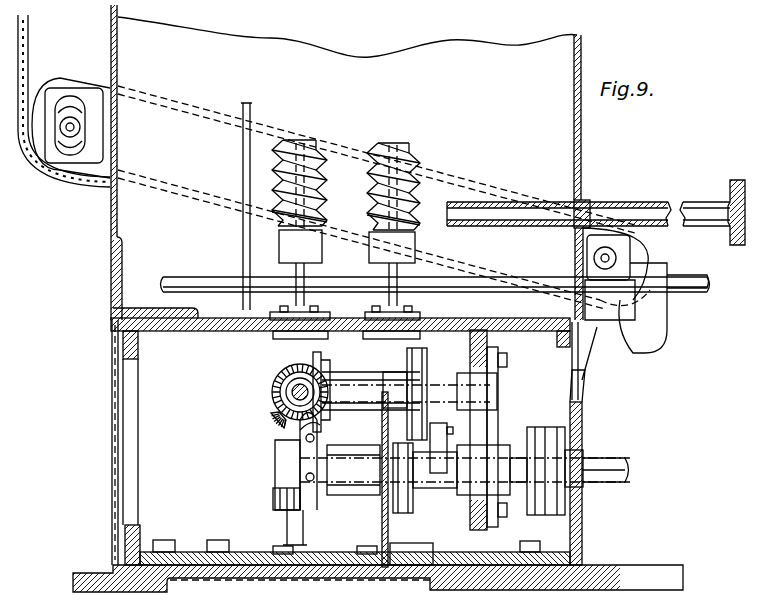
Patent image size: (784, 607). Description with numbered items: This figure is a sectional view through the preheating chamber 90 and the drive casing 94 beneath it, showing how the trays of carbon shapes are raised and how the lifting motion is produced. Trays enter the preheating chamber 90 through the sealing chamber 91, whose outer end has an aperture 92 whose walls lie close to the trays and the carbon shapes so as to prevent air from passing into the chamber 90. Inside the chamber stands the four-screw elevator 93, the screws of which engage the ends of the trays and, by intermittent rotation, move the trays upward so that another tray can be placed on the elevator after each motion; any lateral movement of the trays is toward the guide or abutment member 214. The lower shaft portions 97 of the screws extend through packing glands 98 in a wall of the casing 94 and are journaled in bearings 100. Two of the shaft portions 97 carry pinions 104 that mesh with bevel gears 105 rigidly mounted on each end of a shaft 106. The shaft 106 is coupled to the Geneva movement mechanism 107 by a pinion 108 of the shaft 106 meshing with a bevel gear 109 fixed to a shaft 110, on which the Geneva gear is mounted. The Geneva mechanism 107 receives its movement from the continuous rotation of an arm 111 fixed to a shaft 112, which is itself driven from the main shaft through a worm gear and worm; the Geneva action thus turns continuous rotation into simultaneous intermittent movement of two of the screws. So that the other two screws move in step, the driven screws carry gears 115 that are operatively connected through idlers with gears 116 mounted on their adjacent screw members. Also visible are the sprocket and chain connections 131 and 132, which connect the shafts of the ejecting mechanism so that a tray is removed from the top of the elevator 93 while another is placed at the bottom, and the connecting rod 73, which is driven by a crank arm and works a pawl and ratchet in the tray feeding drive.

The sprocket and chain connection 131 is at (22, 52).
The guide or abutment member 214 is at (245, 180).
The sprocket and chain connection 132 is at (183, 205).
The four-screw elevator 93 is at (368, 168).
The connecting rod 73 is at (372, 210).
The packing gland 98 is at (367, 315).
The preheating chamber 90 is at (557, 150).
The sealing chamber 91 is at (627, 200).
The aperture 92 is at (743, 180).
The shaft portion 97 is at (384, 360).
The Geneva movement mechanism 107 is at (417, 368).
The shaft 106 is at (293, 390).
The bevel gear 105 is at (270, 407).
The pinion 108 is at (277, 423).
The pinion 104 is at (290, 430).
The bevel gear 109 is at (303, 425).
The bearing 100 is at (280, 476).
The gear 115 is at (282, 498).
The casing 94 is at (153, 495).
The shaft 110 is at (370, 398).
The gear 116 is at (392, 522).
The arm 111 is at (437, 495).
The shaft 112 is at (607, 465).